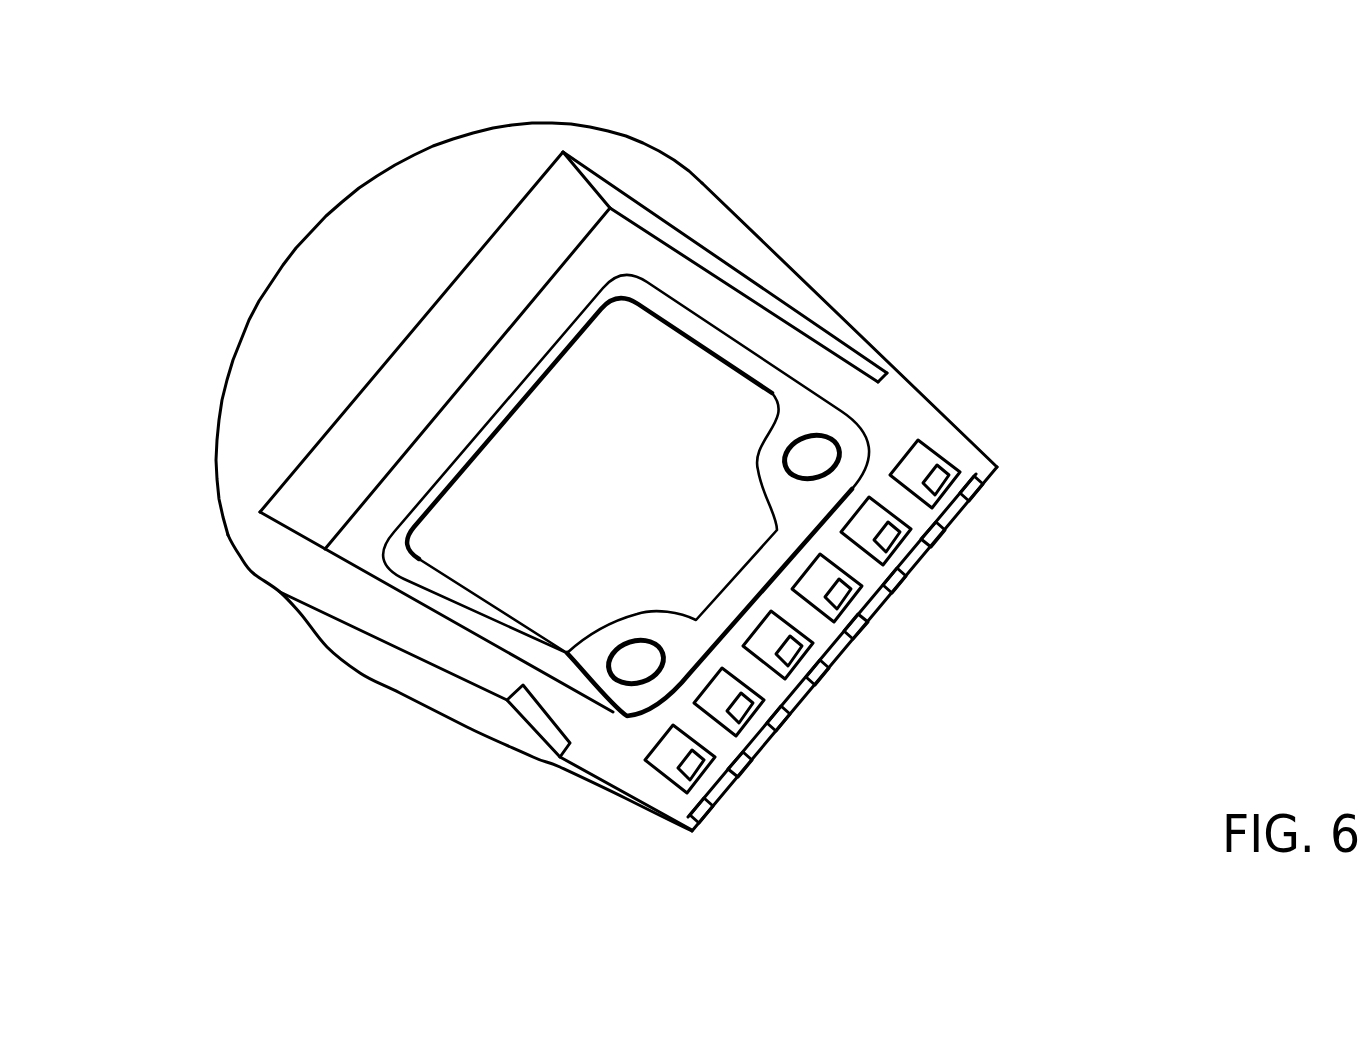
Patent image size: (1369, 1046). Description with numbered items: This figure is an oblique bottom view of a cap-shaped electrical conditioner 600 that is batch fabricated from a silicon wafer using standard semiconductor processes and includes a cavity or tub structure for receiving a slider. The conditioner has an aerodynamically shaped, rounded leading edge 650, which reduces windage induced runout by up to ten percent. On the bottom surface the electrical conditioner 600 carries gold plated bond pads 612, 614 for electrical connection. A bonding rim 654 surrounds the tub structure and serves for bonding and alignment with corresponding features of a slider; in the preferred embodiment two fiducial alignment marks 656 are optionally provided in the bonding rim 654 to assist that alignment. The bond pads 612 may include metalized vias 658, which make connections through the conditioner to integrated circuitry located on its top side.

The electrical conditioner 600 is at (1110, 345).
The bond pads 612 is at (739, 671).
The bond pads 614 is at (937, 546).
The leading edge 650 is at (244, 188).
The bonding rim 654 is at (713, 322).
The fiducial alignment marks 656 is at (800, 433).
The metalized vias 658 is at (672, 773).